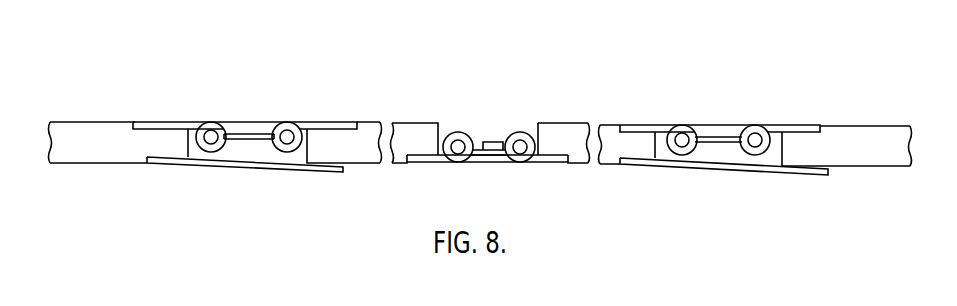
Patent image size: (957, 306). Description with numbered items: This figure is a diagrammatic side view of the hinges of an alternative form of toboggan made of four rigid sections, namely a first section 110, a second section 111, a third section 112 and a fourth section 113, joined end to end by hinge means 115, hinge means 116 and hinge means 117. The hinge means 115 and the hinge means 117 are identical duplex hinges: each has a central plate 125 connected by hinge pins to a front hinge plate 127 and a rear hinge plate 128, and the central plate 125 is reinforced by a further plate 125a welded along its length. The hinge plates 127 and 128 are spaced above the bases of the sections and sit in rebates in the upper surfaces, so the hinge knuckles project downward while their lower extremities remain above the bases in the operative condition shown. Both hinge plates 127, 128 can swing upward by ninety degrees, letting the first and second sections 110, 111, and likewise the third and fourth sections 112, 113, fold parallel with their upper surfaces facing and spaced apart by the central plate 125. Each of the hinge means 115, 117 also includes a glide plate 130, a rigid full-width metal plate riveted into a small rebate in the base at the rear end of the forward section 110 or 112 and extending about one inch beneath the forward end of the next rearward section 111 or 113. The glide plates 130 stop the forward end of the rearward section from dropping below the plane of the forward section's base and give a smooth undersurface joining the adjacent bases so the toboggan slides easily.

The first section 110 is at (75, 131).
The second section 111 is at (420, 132).
The third section 112 is at (570, 134).
The fourth section 113 is at (848, 136).
The hinge means 115 is at (312, 98).
The hinge means 116 is at (498, 115).
The hinge means 117 is at (750, 118).
The central plate 125 is at (248, 129).
The further plate 125a is at (233, 135).
The front hinge plate 127 is at (165, 128).
The rear hinge plate 128 is at (327, 128).
The glide plate 130 is at (237, 168).